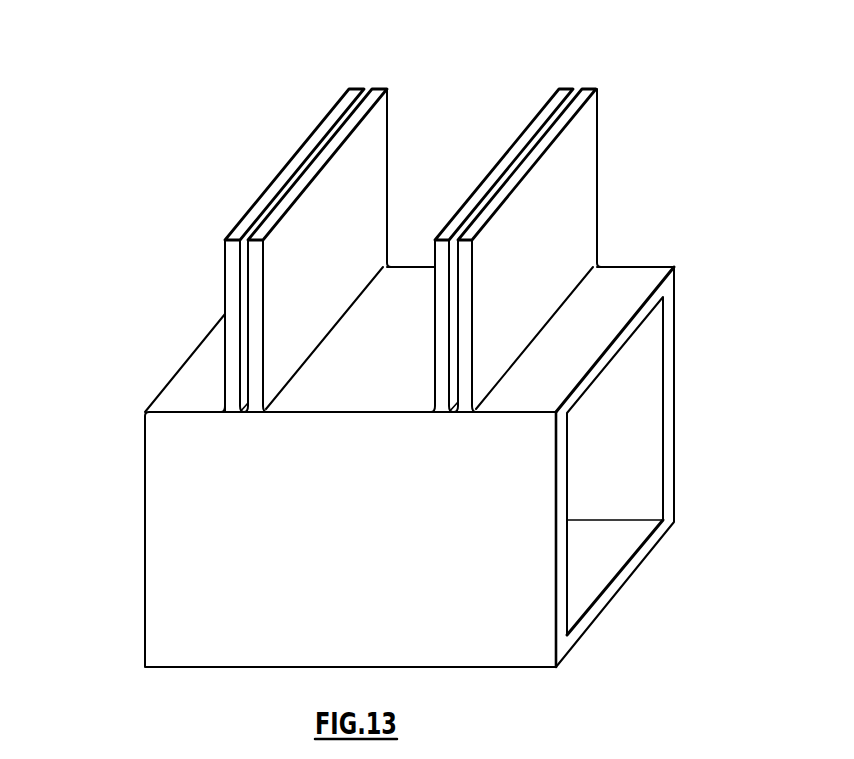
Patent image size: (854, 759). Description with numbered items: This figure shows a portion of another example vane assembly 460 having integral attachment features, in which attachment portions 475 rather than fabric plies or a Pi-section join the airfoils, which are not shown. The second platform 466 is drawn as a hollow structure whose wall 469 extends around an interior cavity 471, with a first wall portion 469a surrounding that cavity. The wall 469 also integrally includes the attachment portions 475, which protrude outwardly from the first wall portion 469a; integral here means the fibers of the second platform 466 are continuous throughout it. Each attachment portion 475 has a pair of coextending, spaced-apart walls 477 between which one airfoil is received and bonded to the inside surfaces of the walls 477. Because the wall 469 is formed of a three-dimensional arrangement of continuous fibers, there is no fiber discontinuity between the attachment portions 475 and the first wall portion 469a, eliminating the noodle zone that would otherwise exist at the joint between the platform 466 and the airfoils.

The vane assembly 460 is at (394, 359).
The second platform 466 is at (533, 630).
The wall 469 is at (659, 467).
The first wall portion 469a is at (644, 404).
The interior cavity 471 is at (630, 506).
The attachment portions 475 is at (462, 225).
The walls 477 is at (570, 88).